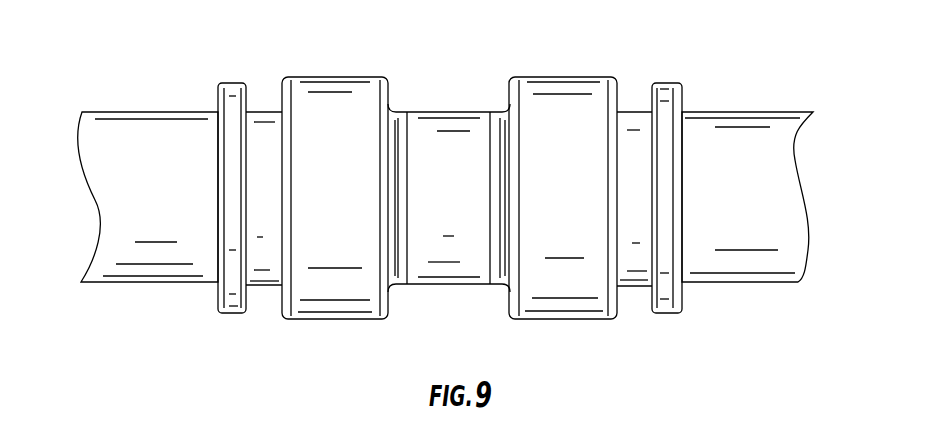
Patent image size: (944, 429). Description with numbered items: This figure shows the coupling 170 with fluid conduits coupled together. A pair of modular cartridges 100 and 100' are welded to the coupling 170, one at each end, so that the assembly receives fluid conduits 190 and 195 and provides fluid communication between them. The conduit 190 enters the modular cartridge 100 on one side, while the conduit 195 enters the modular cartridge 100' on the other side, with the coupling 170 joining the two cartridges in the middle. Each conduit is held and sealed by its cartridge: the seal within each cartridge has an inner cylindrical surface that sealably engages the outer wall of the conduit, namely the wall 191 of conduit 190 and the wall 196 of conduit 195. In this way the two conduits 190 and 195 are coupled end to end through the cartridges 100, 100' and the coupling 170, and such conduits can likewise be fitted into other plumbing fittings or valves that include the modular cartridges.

The modular cartridge 100 is at (322, 168).
The modular cartridge 100' is at (566, 177).
The coupling 170 is at (443, 103).
The conduit 190 is at (176, 291).
The wall 191 is at (190, 110).
The conduit 195 is at (742, 293).
The wall 196 is at (775, 110).